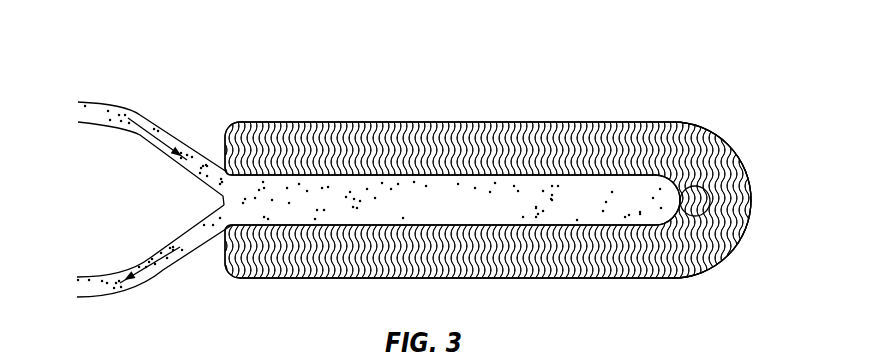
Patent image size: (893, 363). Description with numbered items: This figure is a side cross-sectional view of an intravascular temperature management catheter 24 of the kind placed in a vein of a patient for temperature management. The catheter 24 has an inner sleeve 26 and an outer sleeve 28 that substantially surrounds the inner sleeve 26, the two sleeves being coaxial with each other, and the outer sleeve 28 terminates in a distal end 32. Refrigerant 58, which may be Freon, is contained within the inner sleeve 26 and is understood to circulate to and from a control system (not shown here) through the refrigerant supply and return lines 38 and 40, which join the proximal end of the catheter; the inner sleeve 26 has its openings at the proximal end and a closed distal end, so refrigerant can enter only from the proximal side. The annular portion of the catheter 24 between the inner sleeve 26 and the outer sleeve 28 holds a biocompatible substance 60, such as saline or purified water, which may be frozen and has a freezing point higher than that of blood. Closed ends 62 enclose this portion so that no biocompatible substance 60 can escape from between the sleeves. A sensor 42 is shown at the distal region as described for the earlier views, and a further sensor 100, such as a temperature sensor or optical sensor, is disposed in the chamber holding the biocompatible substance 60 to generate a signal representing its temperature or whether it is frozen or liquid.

The intravascular temperature management catheter 24 is at (563, 97).
The inner sleeve 26 is at (560, 228).
The outer sleeve 28 is at (493, 278).
The distal end 32 is at (743, 227).
The supply line 38 is at (102, 103).
The return line 40 is at (100, 297).
The sensor 42 is at (708, 200).
The refrigerant 58 is at (532, 215).
The biocompatible substance 60 is at (638, 161).
The closed ends 62 is at (227, 160).
The sensor 100 is at (285, 137).